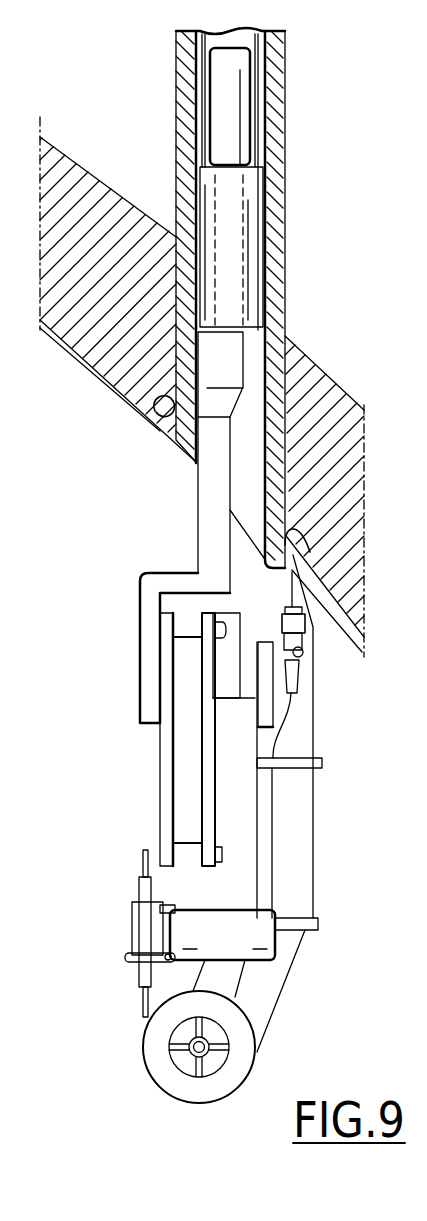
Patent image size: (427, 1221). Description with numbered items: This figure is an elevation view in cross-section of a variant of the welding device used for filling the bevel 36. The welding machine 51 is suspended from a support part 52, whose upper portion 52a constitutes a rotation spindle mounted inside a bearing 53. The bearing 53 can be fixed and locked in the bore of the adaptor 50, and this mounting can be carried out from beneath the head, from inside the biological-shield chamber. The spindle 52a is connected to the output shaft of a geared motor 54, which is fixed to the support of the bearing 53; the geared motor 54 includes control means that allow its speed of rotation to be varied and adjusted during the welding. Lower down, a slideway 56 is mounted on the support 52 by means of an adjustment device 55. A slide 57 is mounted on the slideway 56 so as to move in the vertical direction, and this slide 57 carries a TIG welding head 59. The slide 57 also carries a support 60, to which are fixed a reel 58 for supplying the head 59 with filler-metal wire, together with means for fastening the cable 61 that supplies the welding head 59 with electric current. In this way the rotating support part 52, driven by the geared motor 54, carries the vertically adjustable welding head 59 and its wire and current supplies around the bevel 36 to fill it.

The adaptor 50 is at (287, 141).
The geared motor 54 is at (243, 93).
The bearing 53 is at (250, 220).
The upper portion of support part 52a is at (230, 350).
The support part 52 is at (205, 522).
The bevel 36 is at (170, 423).
The TIG welding head 59 is at (300, 657).
The adjustment device 55 is at (173, 754).
The slideway 56 is at (207, 799).
The slide 57 is at (240, 812).
The welding machine 51 is at (330, 826).
The cable 61 is at (140, 853).
The support 60 is at (244, 981).
The reel 58 is at (222, 1083).